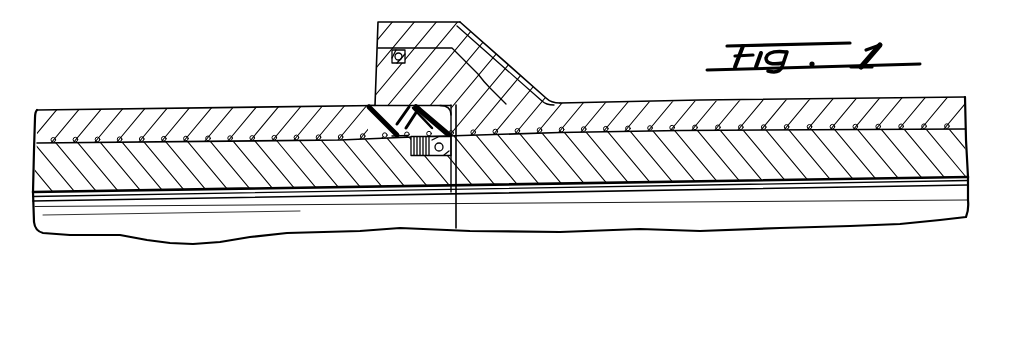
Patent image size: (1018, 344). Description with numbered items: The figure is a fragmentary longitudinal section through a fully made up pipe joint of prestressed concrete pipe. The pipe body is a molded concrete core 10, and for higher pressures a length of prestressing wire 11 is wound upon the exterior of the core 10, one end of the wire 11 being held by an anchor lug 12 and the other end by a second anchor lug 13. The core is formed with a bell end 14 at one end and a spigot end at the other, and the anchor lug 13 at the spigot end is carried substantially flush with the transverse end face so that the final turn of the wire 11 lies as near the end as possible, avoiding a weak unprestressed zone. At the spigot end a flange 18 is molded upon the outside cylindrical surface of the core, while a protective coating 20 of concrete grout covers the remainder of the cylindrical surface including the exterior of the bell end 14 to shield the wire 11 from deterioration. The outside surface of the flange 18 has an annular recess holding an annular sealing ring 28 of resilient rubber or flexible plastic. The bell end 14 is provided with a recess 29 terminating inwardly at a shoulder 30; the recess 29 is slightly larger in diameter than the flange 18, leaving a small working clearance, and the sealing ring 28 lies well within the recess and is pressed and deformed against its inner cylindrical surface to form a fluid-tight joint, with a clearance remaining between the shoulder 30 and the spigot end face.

The molded concrete core 10 is at (952, 152).
The prestressing wire 11 is at (187, 142).
The protective coating 20 is at (90, 115).
The anchor lug 12 is at (393, 55).
The anchor lug 13 is at (433, 154).
The bell end 14 is at (372, 78).
The flange 18 is at (377, 107).
The annular sealing ring 28 is at (400, 140).
The recess 29 is at (487, 88).
The shoulder 30 is at (457, 198).